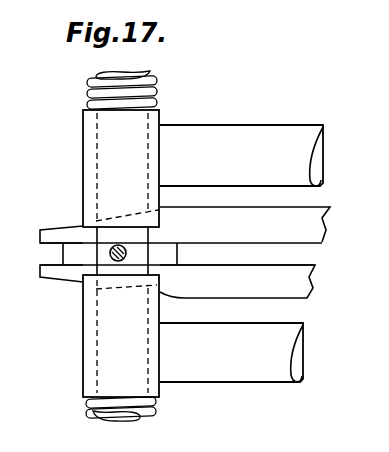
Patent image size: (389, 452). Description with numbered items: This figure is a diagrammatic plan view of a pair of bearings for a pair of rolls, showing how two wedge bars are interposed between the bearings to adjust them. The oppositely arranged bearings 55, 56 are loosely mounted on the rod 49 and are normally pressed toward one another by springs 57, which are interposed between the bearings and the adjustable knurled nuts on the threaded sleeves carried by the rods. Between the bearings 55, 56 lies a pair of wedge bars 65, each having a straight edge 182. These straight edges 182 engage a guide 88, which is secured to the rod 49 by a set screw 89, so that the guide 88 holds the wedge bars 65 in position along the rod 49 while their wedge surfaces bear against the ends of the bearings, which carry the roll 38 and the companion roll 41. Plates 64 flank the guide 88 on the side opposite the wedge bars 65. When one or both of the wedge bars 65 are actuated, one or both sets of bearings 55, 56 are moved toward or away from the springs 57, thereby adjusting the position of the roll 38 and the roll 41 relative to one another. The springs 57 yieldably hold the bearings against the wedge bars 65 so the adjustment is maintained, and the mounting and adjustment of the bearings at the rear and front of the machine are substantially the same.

The roll 38 is at (262, 373).
The upper shaft 41 is at (265, 130).
The rod 49 is at (118, 75).
The bearing 55 is at (83, 360).
The bearing 56 is at (93, 152).
The spring 57 is at (88, 92).
The side plate 64 is at (57, 228).
The wedge bar 65 is at (327, 218).
The guide 88 is at (70, 252).
The set screw 89 is at (117, 262).
The straight edge 182 is at (218, 244).